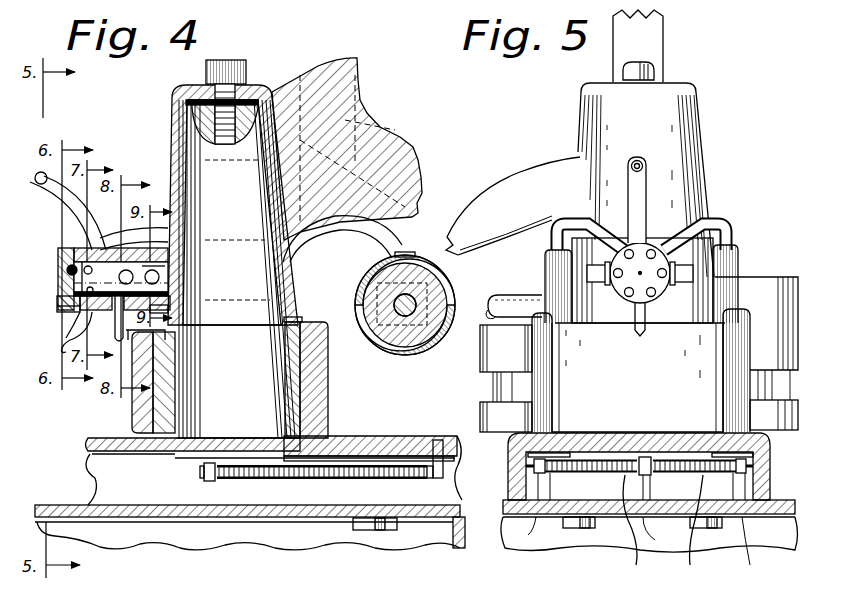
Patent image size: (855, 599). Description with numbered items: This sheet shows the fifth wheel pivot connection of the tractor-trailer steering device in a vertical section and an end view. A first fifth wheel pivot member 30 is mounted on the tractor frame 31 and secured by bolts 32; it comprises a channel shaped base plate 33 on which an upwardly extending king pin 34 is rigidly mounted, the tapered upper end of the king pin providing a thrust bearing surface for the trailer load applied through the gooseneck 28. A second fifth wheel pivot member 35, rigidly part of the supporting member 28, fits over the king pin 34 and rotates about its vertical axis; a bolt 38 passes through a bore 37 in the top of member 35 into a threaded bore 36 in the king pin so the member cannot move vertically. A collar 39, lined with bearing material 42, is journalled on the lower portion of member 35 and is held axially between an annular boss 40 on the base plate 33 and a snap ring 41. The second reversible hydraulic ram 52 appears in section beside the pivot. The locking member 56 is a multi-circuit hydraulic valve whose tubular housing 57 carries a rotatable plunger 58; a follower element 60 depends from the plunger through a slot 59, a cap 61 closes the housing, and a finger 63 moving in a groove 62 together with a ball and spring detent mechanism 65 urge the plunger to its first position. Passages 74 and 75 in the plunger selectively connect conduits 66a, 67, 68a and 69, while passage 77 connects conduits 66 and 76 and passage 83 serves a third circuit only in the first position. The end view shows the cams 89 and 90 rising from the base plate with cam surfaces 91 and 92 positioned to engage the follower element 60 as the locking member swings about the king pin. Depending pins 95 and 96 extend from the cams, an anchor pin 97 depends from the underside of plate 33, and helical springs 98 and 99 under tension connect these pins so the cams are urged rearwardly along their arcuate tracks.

In FIG. 4, the supporting member 28 is at (355, 80).
In FIG. 4, the first fifth wheel pivot member 30 is at (368, 432).
In FIG. 5, the first fifth wheel pivot member 30 is at (770, 450).
In FIG. 4, the tractor frame 31 is at (48, 510).
In FIG. 5, the tractor frame 31 is at (772, 502).
In FIG. 4, the bolts 32 is at (388, 527).
In FIG. 5, the bolts 32 is at (578, 528).
In FIG. 4, the base plate 33 is at (406, 436).
In FIG. 5, the base plate 33 is at (762, 470).
In FIG. 4, the king pin 34 is at (240, 305).
In FIG. 4, the second fifth wheel pivot member 35 is at (172, 118).
In FIG. 5, the second fifth wheel pivot member 35 is at (706, 114).
In FIG. 4, the threaded bore 36 is at (248, 140).
In FIG. 4, the bore 37 is at (262, 86).
In FIG. 5, the bore 37 is at (638, 46).
In FIG. 4, the bolt 38 is at (228, 60).
In FIG. 5, the bolt 38 is at (638, 71).
In FIG. 4, the collar 39 is at (306, 320).
In FIG. 4, the annular boss 40 is at (312, 438).
In FIG. 4, the snap ring 41 is at (294, 316).
In FIG. 4, the bearing material 42 is at (305, 385).
In FIG. 4, the second reversible hydraulic ram 52 is at (425, 355).
In FIG. 4, the locking member 56 is at (58, 285).
In FIG. 5, the locking member 56 is at (667, 300).
In FIG. 4, the housing 57 is at (105, 318).
In FIG. 4, the plunger 58 is at (150, 268).
In FIG. 4, the slot 59 is at (160, 310).
In FIG. 4, the follower element 60 is at (130, 336).
In FIG. 5, the follower element 60 is at (640, 335).
In FIG. 4, the cap 61 is at (56, 304).
In FIG. 5, the cap 61 is at (700, 255).
In FIG. 4, the groove 62 is at (68, 318).
In FIG. 4, the finger 63 is at (64, 308).
In FIG. 4, the ball and spring detent mechanism 65 is at (62, 248).
In FIG. 5, the conduit 66 is at (693, 272).
In FIG. 4, the conduit 66a is at (62, 190).
In FIG. 5, the conduit 66a is at (640, 185).
In FIG. 5, the conduit 67 is at (712, 222).
In FIG. 4, the conduit 68a is at (63, 346).
In FIG. 4, the conduit 69 is at (412, 228).
In FIG. 5, the conduit 69 is at (588, 232).
In FIG. 4, the passage 74 is at (116, 275).
In FIG. 4, the passage 75 is at (64, 266).
In FIG. 5, the conduit 76 is at (548, 270).
In FIG. 4, the passage 77 is at (130, 262).
In FIG. 4, the passage 83 is at (160, 277).
In FIG. 5, the cam 89 is at (543, 396).
In FIG. 5, the cam 90 is at (732, 380).
In FIG. 5, the cam surface 91 is at (540, 345).
In FIG. 5, the cam surface 92 is at (756, 353).
In FIG. 4, the depending pin 95 is at (212, 482).
In FIG. 5, the depending pin 95 is at (530, 502).
In FIG. 5, the depending pin 96 is at (744, 521).
In FIG. 4, the anchor pin 97 is at (437, 480).
In FIG. 5, the anchor pin 97 is at (654, 503).
In FIG. 4, the helical spring 98 is at (298, 482).
In FIG. 5, the helical spring 98 is at (591, 521).
In FIG. 5, the helical spring 99 is at (694, 521).